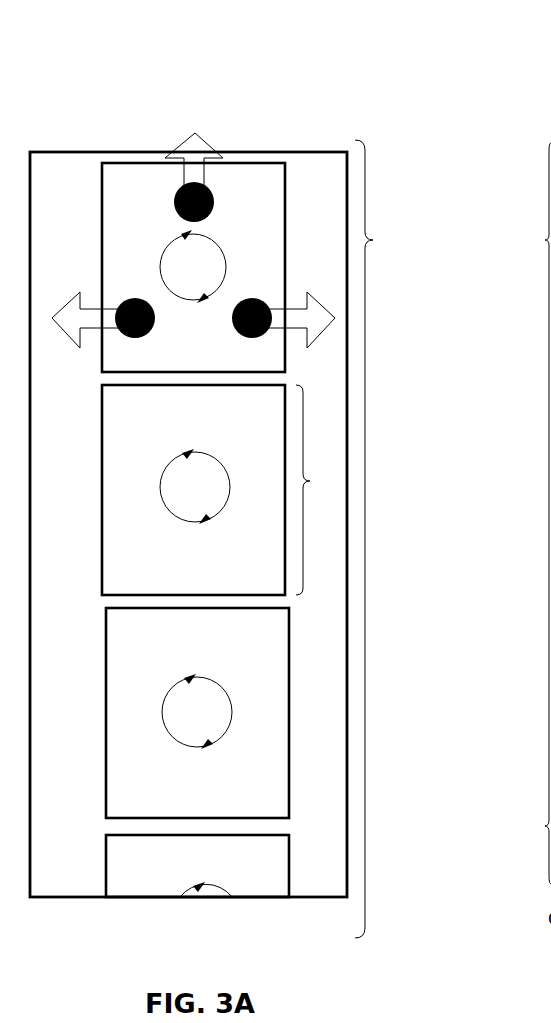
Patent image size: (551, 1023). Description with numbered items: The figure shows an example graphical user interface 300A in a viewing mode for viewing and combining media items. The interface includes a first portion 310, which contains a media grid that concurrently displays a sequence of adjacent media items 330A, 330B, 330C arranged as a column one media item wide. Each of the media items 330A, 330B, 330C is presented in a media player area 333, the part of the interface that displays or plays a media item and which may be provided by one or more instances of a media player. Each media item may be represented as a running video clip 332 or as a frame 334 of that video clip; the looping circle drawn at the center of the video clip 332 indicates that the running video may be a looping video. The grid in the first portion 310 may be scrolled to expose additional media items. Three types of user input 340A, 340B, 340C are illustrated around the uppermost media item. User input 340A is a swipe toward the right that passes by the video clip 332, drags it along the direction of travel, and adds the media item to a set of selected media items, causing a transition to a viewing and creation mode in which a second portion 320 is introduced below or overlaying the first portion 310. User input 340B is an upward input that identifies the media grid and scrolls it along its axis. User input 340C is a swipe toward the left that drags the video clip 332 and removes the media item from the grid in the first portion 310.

The user interface 300A is at (382, 48).
The first portion 310 is at (374, 240).
The second portion 320 is at (548, 826).
The media item 330A is at (102, 375).
The media item 330B is at (102, 557).
The media item 330C is at (106, 713).
The video clip 332 is at (285, 358).
The media player area 333 is at (312, 479).
The frame 334 is at (550, 757).
The user input 340A is at (309, 325).
The user input 340B is at (195, 131).
The user input 340C is at (78, 316).